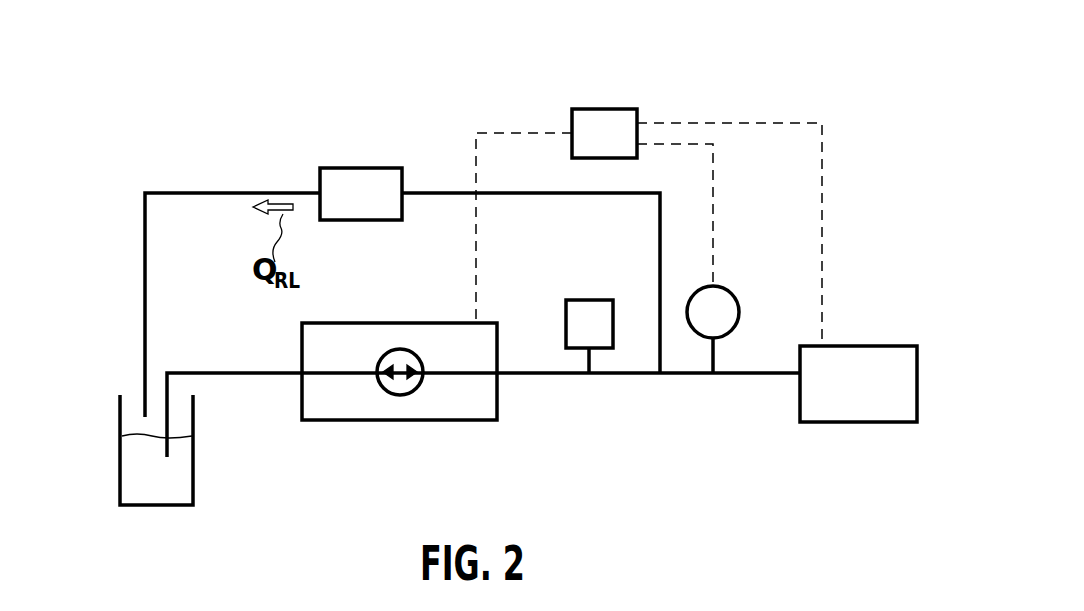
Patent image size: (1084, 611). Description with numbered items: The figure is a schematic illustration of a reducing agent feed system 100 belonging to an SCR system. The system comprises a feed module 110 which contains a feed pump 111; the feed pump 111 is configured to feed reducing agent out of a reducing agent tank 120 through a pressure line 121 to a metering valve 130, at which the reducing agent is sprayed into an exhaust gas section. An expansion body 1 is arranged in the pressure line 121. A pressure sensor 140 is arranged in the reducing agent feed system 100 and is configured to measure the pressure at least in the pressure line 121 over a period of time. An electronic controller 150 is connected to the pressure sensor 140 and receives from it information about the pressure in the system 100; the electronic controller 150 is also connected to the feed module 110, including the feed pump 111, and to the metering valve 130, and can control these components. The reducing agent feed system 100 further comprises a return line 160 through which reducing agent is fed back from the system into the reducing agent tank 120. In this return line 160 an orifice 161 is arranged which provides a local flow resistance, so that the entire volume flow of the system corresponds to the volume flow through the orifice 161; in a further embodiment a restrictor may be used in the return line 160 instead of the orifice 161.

The expansion body 1 is at (592, 299).
The reducing agent feed system 100 is at (134, 170).
The feed module 110 is at (342, 422).
The feed pump 111 is at (400, 396).
The reducing agent tank 120 is at (195, 481).
The pressure line 121 is at (675, 375).
The metering valve 130 is at (883, 345).
The pressure sensor 140 is at (741, 300).
The electronic controller 150 is at (606, 109).
The return line 160 is at (436, 192).
The orifice 161 is at (363, 166).